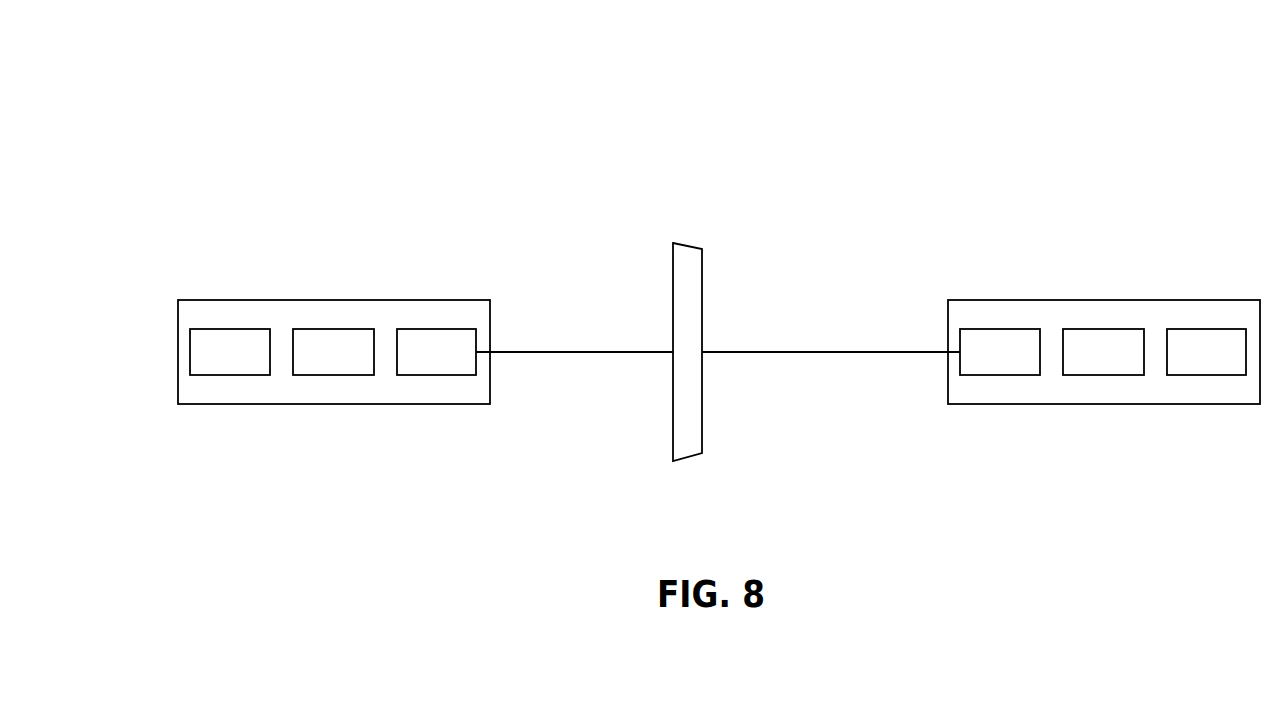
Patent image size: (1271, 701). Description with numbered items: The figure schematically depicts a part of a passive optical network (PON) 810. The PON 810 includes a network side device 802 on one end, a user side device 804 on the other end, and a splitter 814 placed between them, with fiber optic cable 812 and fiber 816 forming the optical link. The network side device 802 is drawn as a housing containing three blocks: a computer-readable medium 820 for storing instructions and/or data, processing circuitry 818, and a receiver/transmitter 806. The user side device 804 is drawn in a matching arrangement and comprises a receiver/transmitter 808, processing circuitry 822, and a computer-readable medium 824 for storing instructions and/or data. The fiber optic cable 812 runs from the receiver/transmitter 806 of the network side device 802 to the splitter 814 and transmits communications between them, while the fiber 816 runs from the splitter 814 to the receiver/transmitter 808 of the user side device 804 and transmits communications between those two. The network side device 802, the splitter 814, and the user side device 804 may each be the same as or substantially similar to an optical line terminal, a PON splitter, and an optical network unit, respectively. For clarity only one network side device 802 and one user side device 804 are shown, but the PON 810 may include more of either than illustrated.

The passive optical network 810 is at (474, 108).
The network side device 802 is at (382, 300).
The user side device 804 is at (1152, 300).
The receiver/transmitter 806 is at (432, 329).
The receiver/transmitter 808 is at (1003, 329).
The fiber optic cable 812 is at (570, 352).
The splitter 814 is at (684, 243).
The fiber optic cable 816 is at (830, 352).
The processing circuitry 818 is at (333, 329).
The computer-readable medium 820 is at (233, 329).
The processing circuitry 822 is at (1104, 329).
The computer-readable medium 824 is at (1204, 329).